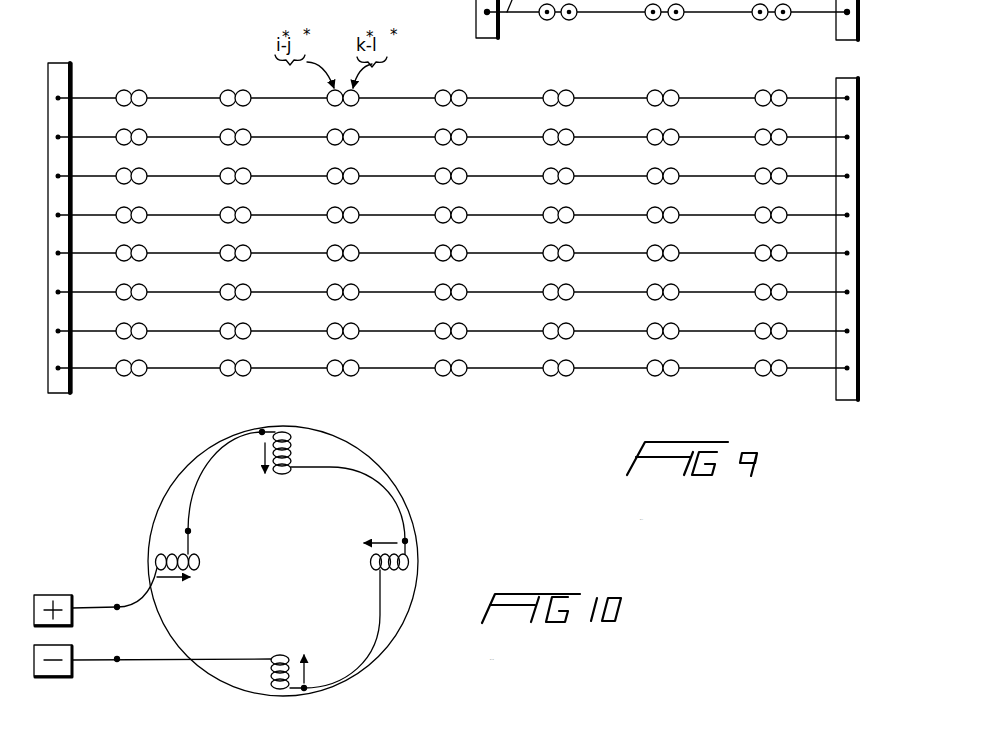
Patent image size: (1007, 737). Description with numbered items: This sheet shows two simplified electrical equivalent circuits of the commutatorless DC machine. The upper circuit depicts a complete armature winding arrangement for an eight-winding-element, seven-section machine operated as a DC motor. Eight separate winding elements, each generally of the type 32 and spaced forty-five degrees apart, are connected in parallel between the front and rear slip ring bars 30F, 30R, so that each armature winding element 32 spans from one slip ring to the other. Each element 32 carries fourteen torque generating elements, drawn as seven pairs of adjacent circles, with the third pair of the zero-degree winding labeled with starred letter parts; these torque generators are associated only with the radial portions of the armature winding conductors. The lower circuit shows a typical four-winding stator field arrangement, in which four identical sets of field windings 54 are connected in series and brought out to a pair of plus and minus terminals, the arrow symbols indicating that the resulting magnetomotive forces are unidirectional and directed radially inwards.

In FIG. 9, the front bus bar 30F is at (60, 65).
In FIG. 9, the rear bus bar 30R is at (848, 244).
In FIG. 9, the armature winding element 32 is at (100, 98).
In FIG. 10, the field winding 54 is at (300, 447).